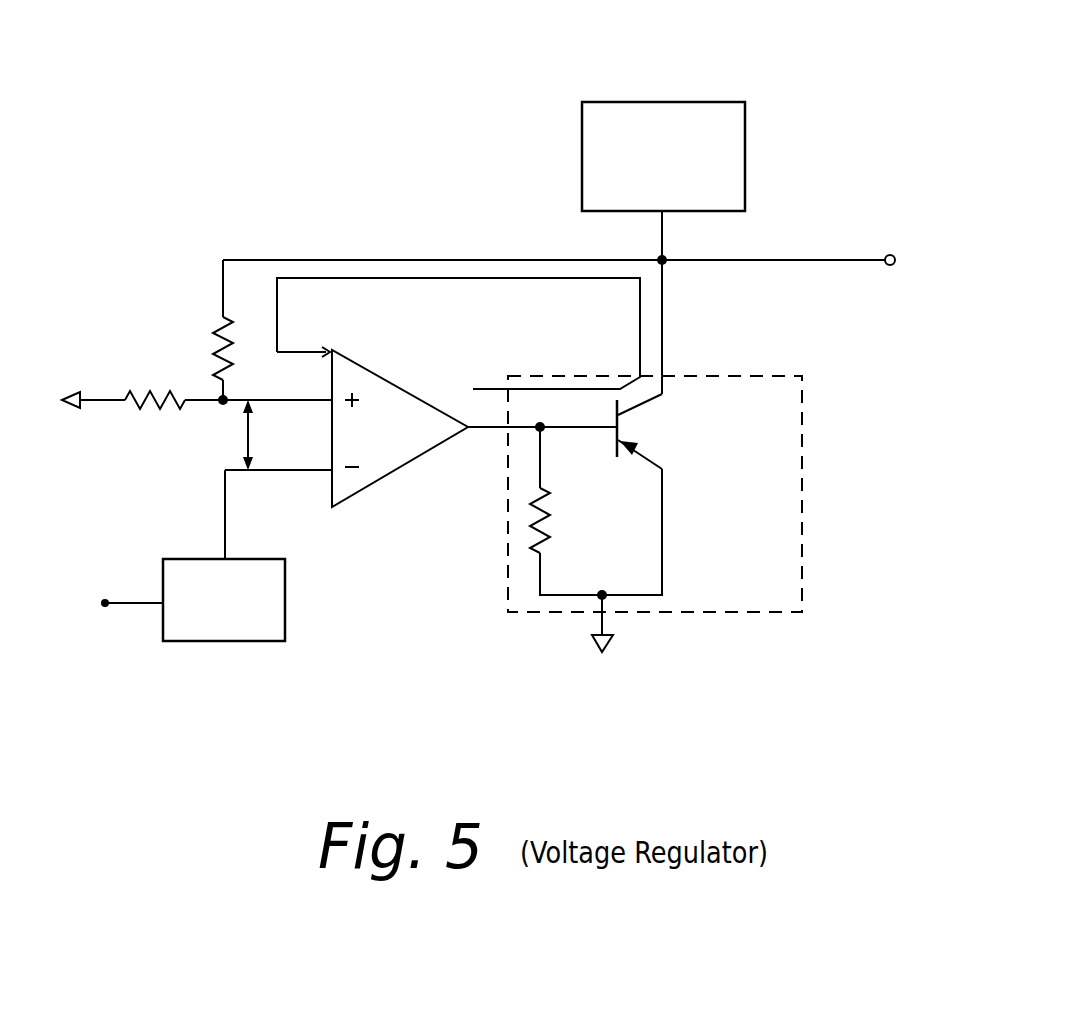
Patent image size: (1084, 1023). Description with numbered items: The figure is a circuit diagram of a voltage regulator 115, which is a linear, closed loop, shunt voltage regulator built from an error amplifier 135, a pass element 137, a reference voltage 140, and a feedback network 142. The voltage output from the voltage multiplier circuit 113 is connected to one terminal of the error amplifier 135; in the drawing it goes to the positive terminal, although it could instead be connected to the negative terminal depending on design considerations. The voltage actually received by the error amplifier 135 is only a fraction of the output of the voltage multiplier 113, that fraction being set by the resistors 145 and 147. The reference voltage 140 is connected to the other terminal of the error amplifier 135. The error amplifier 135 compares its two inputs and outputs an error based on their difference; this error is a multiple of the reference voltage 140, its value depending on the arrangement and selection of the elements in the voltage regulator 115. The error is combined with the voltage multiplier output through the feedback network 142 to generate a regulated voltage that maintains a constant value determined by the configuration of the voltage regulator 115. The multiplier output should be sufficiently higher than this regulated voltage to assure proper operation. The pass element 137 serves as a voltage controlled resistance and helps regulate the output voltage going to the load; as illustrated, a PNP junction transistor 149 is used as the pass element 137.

The voltage regulator 115 is at (482, 98).
The voltage multiplier circuit 113 is at (692, 100).
The feedback network 142 is at (287, 277).
The resistor 145 is at (205, 336).
The resistor 147 is at (145, 417).
The error amplifier 135 is at (383, 476).
The reference voltage 140 is at (207, 642).
The PNP junction transistor 149 is at (645, 430).
The pass element 137 is at (802, 413).